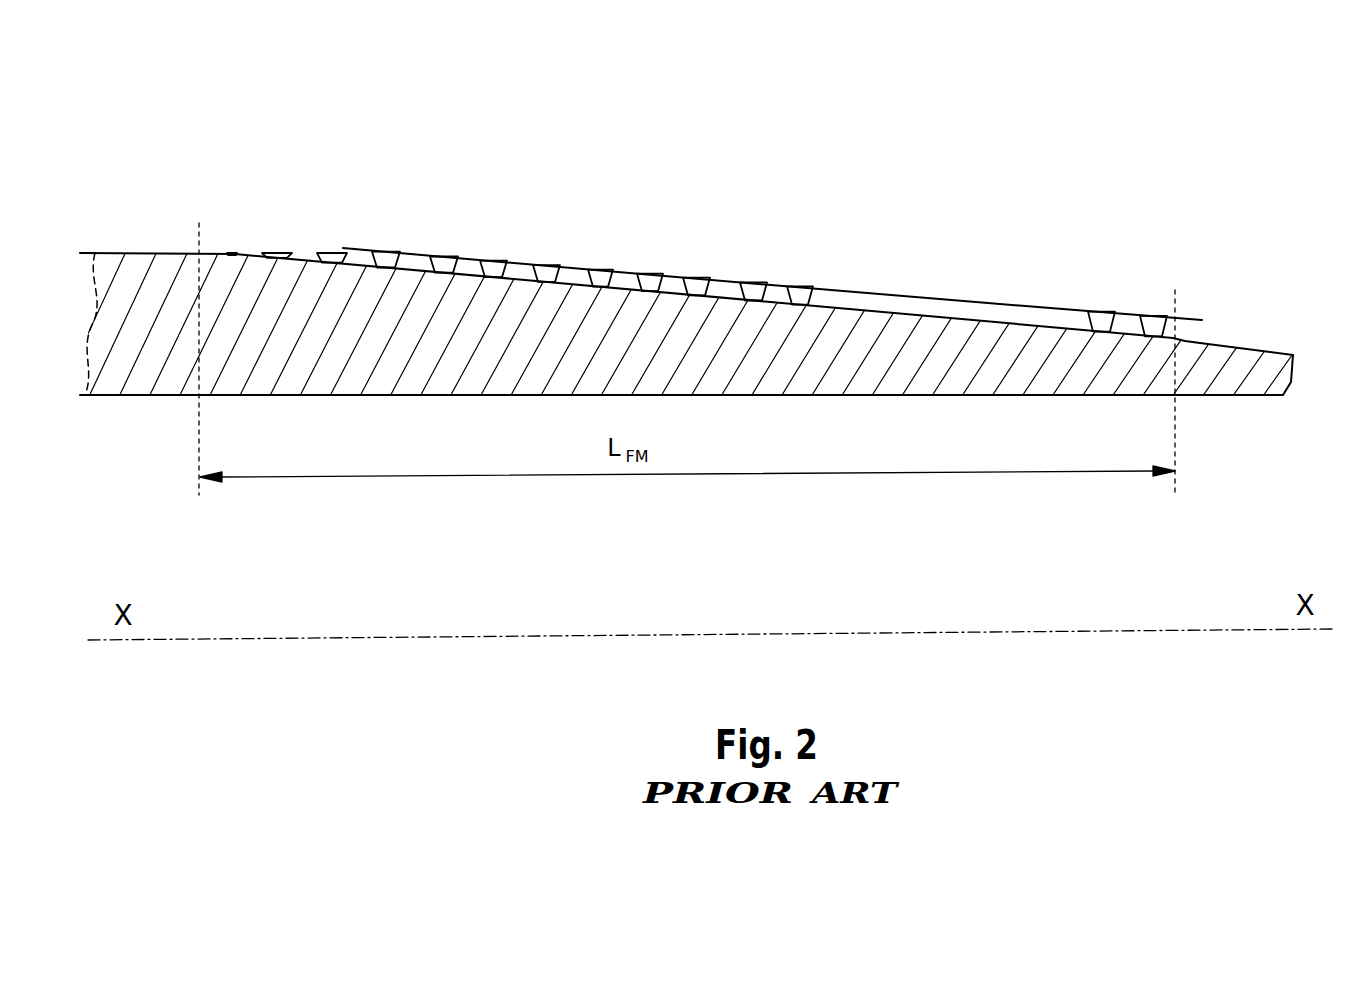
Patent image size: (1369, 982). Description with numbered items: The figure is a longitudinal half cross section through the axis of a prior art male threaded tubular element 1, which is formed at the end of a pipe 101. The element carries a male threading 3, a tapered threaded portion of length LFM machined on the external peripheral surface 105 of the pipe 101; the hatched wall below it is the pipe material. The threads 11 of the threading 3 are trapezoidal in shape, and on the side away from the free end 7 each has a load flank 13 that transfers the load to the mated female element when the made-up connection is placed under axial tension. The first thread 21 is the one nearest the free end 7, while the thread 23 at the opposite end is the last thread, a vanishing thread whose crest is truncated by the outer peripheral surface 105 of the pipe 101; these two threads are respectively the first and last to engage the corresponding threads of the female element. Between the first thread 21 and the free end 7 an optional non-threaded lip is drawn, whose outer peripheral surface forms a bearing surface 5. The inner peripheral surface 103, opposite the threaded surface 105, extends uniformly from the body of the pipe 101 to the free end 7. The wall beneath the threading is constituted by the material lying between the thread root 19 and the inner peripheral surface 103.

The male threaded tubular element 1 is at (758, 433).
The male threading 3 is at (781, 236).
The bearing surface 5 is at (1247, 340).
The free end 7 is at (1297, 378).
The threads 11 is at (595, 270).
The load flank 13 is at (572, 273).
The thread root 19 is at (462, 257).
The first thread 21 is at (1157, 313).
The last thread 23 is at (280, 253).
The pipe 101 is at (157, 308).
The inner peripheral surface 103 is at (428, 397).
The external peripheral surface 105 is at (126, 253).